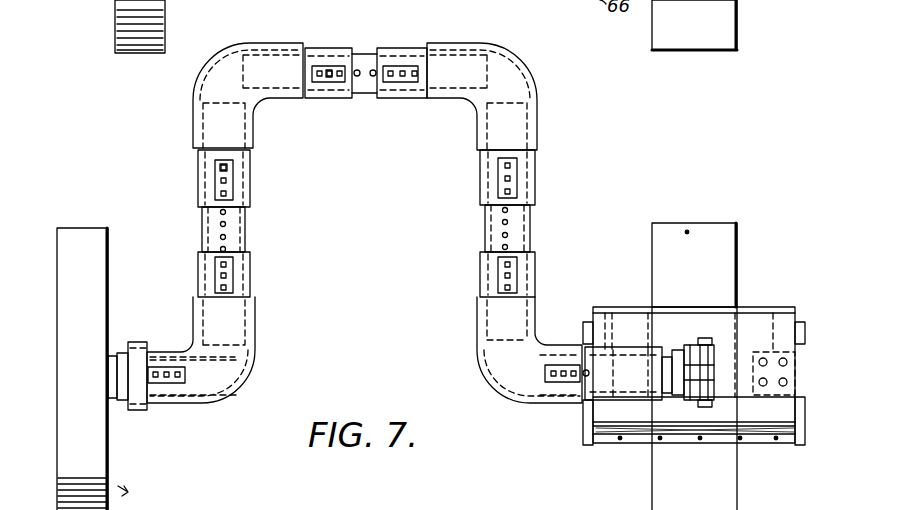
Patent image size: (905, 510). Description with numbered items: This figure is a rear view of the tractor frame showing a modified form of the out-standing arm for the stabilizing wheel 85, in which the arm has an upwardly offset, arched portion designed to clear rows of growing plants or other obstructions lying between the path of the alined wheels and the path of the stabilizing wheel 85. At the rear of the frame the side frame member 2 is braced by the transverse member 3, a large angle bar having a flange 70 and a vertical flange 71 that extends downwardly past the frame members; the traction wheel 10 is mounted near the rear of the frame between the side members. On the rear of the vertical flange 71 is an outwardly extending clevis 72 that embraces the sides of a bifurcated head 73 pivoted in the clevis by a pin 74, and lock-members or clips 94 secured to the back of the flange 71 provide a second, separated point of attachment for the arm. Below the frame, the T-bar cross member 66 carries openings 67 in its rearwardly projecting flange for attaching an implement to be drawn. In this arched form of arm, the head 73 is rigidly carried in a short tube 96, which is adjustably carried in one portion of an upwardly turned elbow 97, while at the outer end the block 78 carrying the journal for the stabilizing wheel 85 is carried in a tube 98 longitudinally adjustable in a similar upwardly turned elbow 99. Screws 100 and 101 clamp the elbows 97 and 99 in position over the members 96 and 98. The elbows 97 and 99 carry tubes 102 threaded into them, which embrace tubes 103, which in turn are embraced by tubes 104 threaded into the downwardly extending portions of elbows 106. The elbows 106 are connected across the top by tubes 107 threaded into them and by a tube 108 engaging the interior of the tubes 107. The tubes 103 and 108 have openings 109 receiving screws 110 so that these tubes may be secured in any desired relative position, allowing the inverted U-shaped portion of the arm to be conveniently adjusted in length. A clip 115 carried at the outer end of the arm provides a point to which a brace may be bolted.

The side frame member 2 is at (603, 327).
The transverse member 3 is at (628, 306).
The traction wheel 10 is at (700, 223).
The T-bar cross member 66 is at (772, 445).
The openings 67 is at (740, 437).
The flange 70 is at (763, 308).
The vertical flange 71 is at (754, 355).
The clevis 72 is at (708, 350).
The bifurcated head 73 is at (667, 350).
The pin 74 is at (690, 400).
The block 78 is at (116, 400).
The stabilizing wheel 85 is at (82, 369).
The lock-members or clips 94 is at (797, 380).
The short tube 96 is at (606, 400).
The upwardly turned elbow 97 is at (518, 388).
The tube 98 is at (162, 352).
The upwardly turned elbow 99 is at (218, 395).
The screw 100 is at (566, 384).
The screw 101 is at (175, 385).
The tubes 102 is at (250, 283).
The tubes 103 is at (248, 235).
The tubes 104 is at (252, 168).
The elbows 106 is at (207, 80).
The tubes 107 is at (330, 50).
The tube 108 is at (370, 90).
The openings 109 is at (357, 77).
The screws 110 is at (328, 78).
The clip 115 is at (150, 412).